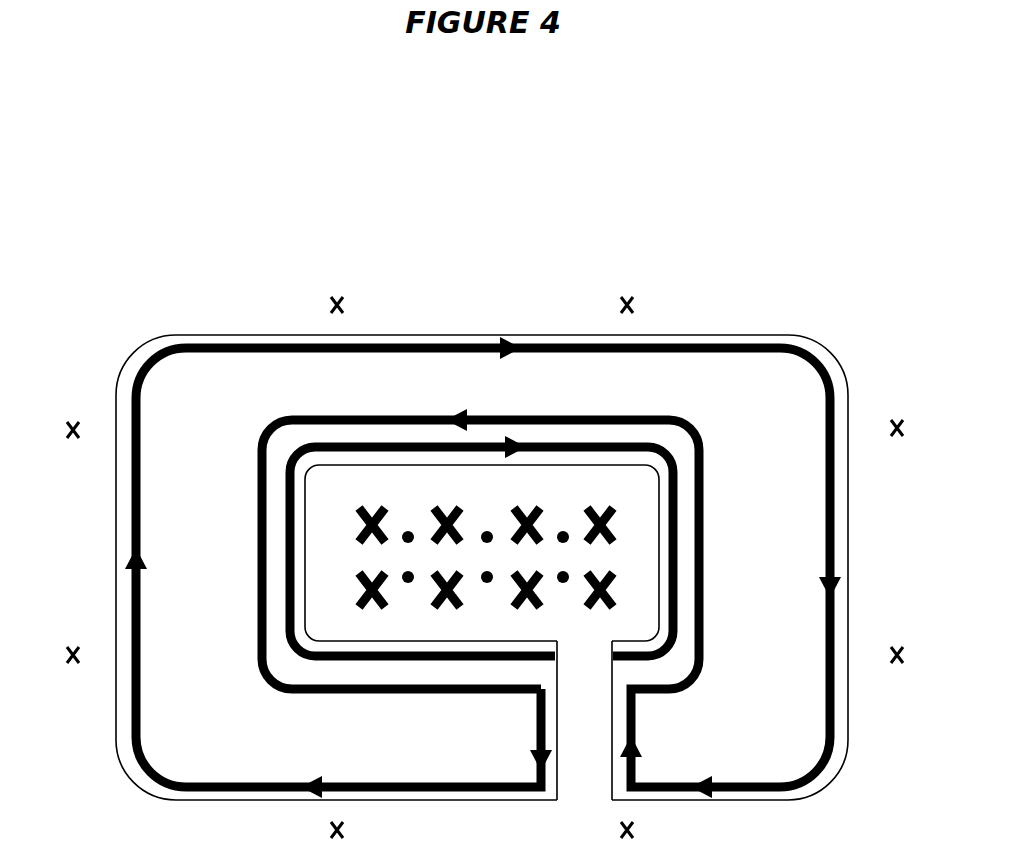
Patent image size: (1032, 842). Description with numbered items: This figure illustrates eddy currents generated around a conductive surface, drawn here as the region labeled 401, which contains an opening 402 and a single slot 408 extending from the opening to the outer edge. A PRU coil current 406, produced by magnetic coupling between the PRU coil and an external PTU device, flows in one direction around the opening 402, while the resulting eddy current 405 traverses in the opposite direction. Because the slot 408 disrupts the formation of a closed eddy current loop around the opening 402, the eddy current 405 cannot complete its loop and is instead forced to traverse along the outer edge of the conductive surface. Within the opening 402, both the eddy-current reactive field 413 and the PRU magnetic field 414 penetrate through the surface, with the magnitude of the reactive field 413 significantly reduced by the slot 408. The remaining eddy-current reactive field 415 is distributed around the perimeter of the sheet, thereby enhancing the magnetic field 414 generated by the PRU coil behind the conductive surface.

The substrate / ground plane 401 is at (196, 729).
The opening 402 is at (473, 492).
The eddy current 405 is at (193, 345).
The PRU coil current 406 is at (630, 443).
The slot 408 is at (569, 716).
The eddy-current reactive field 413 is at (408, 530).
The magnetic field 414 is at (357, 507).
The eddy-current reactive field 415 is at (903, 420).